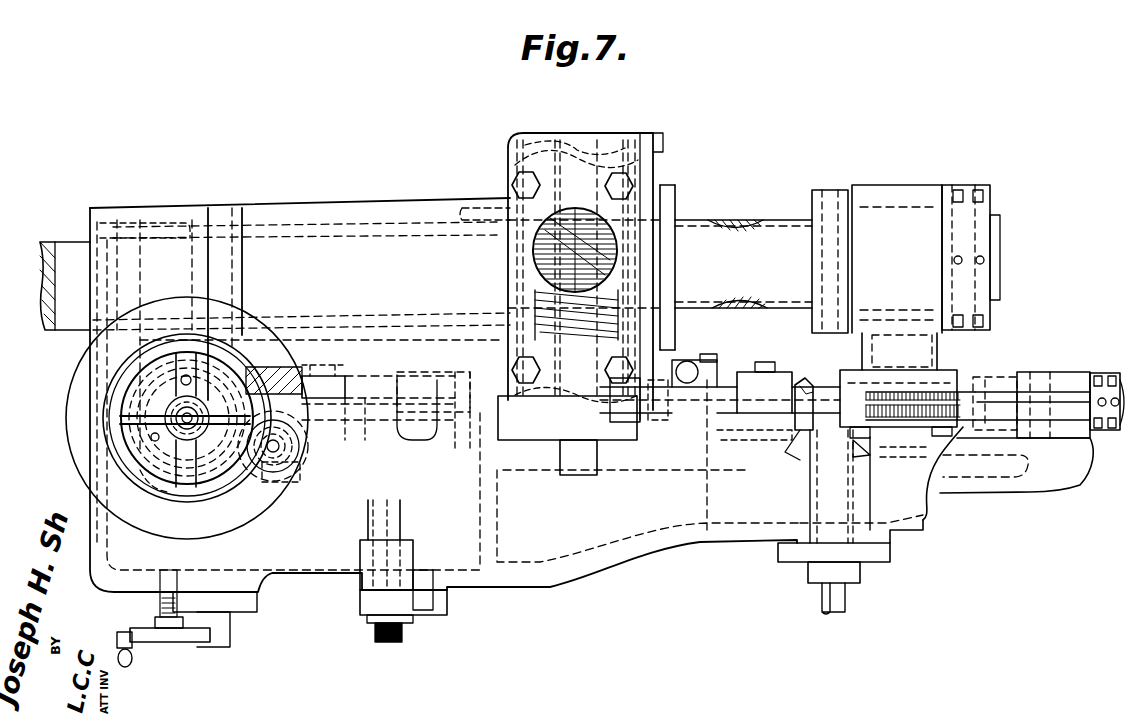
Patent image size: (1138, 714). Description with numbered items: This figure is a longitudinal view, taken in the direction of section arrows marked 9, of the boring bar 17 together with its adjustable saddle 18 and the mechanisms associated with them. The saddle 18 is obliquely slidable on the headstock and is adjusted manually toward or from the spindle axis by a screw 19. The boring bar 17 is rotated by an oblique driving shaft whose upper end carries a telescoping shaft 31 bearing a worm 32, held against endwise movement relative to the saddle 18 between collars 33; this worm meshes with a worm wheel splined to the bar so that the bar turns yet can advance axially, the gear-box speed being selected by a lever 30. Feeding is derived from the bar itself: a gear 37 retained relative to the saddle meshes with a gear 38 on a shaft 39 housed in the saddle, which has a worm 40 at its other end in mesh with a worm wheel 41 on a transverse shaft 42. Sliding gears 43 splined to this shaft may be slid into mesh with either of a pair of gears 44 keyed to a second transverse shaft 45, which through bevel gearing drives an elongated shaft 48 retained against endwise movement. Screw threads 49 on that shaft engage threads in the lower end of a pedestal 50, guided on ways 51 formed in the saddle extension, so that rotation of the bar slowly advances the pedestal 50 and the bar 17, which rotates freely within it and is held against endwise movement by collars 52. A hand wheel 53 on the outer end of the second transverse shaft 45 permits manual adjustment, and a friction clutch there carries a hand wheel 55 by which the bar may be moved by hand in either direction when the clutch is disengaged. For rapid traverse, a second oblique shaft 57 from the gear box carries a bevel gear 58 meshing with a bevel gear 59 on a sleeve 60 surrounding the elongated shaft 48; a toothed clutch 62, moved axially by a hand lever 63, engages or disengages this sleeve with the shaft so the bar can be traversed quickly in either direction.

The section line 9- 9 is at (373, 141).
The boring bar 17 is at (770, 232).
The saddle 18 is at (542, 555).
The screw 19 is at (404, 630).
The lever 30 is at (176, 642).
The telescoping shaft 31 is at (578, 473).
The worm 32 is at (530, 300).
The collars 33 is at (512, 192).
The gear 37 is at (90, 336).
The gear 38 is at (112, 434).
The shaft 39 is at (330, 376).
The worm 40 is at (288, 365).
The worm wheel 41 is at (330, 400).
The transverse shaft 42 is at (287, 458).
The sliding gears 43 is at (298, 470).
The gears 44 is at (183, 472).
The second transverse shaft 45 is at (175, 418).
The elongated shaft 48 is at (417, 412).
The screw threads 49 is at (963, 380).
The pedestal 50 is at (920, 353).
The ways 51 is at (1063, 392).
The collars 52 is at (846, 190).
The hand wheel 53 is at (160, 482).
The hand wheel 55 is at (80, 394).
The second oblique shaft 57 is at (850, 600).
The bevel gear 58 is at (796, 458).
The bevel gear 59 is at (805, 380).
The sleeve 60 is at (752, 425).
The toothed clutch 62 is at (672, 425).
The hand lever 63 is at (700, 365).